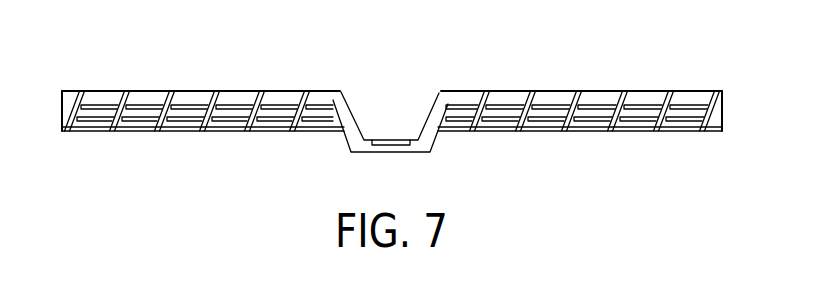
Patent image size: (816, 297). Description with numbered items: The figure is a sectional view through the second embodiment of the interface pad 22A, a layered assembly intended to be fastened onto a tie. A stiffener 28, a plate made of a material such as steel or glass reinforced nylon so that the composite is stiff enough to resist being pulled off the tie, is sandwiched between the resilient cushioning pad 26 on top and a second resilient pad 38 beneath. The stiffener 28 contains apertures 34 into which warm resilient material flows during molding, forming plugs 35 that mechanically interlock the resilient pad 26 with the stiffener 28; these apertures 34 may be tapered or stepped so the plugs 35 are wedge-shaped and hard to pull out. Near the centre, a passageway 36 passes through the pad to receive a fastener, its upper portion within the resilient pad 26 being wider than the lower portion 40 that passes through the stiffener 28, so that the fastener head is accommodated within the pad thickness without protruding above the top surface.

The interface pad 22A is at (168, 72).
The resilient cushioning pad 26 is at (688, 92).
The stiffener 28 is at (662, 131).
The apertures 34 is at (197, 120).
The plugs 35 is at (193, 120).
The passageway 36 is at (428, 93).
The second resilient pad 38 is at (708, 124).
The lower portion of the passageway 40 is at (393, 139).